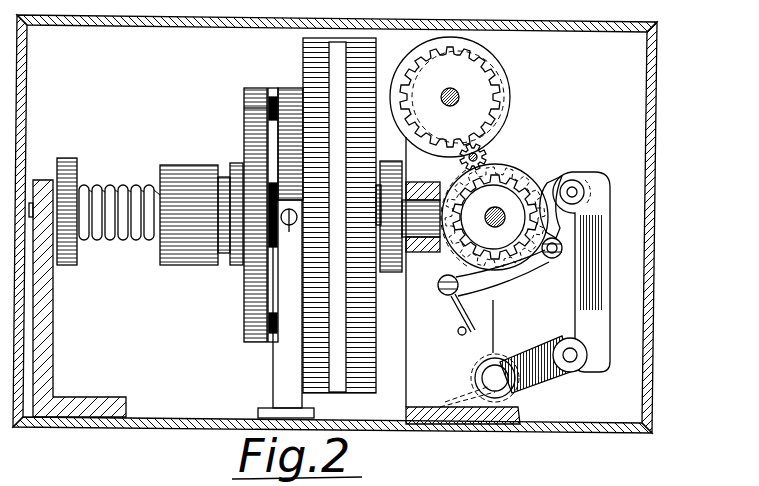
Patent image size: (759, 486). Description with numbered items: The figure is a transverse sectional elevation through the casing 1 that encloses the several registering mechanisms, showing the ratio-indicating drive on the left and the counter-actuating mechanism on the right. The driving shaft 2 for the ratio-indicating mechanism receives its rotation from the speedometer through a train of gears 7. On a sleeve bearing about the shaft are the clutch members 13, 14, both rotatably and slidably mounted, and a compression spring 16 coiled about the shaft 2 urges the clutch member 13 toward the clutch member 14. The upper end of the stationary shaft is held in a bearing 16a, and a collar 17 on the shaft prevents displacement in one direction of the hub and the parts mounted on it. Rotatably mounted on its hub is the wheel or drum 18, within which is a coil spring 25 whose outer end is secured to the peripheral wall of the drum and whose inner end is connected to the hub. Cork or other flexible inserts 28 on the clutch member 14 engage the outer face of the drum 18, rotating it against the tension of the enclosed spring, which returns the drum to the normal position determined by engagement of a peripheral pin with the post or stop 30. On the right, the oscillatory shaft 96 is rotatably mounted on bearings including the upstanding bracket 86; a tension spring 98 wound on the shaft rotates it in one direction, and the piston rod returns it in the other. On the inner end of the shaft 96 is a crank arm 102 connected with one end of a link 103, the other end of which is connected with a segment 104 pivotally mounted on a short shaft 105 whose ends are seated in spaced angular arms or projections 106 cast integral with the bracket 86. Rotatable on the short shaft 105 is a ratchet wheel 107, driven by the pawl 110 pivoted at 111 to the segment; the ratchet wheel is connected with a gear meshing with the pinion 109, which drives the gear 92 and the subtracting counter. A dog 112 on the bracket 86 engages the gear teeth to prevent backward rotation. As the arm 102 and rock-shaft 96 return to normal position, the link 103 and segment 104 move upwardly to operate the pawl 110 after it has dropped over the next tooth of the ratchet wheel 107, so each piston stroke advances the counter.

The casing 1 is at (650, 300).
The driving shaft 2 is at (138, 184).
The train of gears 7 is at (76, 262).
The clutch member 13 is at (196, 250).
The clutch member 14 is at (247, 94).
The compression spring 16 is at (119, 241).
The bearing 16a is at (414, 252).
The collar 17 is at (392, 273).
The wheel or drum 18 is at (293, 100).
The coil spring 25 is at (318, 66).
The cork or flexible inserts 28 is at (268, 103).
The post or stop 30 is at (286, 309).
The upstanding bracket 86 is at (461, 280).
The gear 92 is at (472, 78).
The oscillatory shaft 96 is at (490, 378).
The tension spring 98 is at (510, 395).
The crank arm 102 is at (553, 374).
The link 103 is at (586, 272).
The segment 104 is at (578, 170).
The short shaft 105 is at (498, 210).
The angular arms or projections 106 is at (462, 186).
The ratchet wheel 107 is at (548, 182).
The pinion 109 is at (481, 152).
The pawl 110 is at (562, 235).
The pivot 111 is at (538, 272).
The dog 112 is at (488, 302).